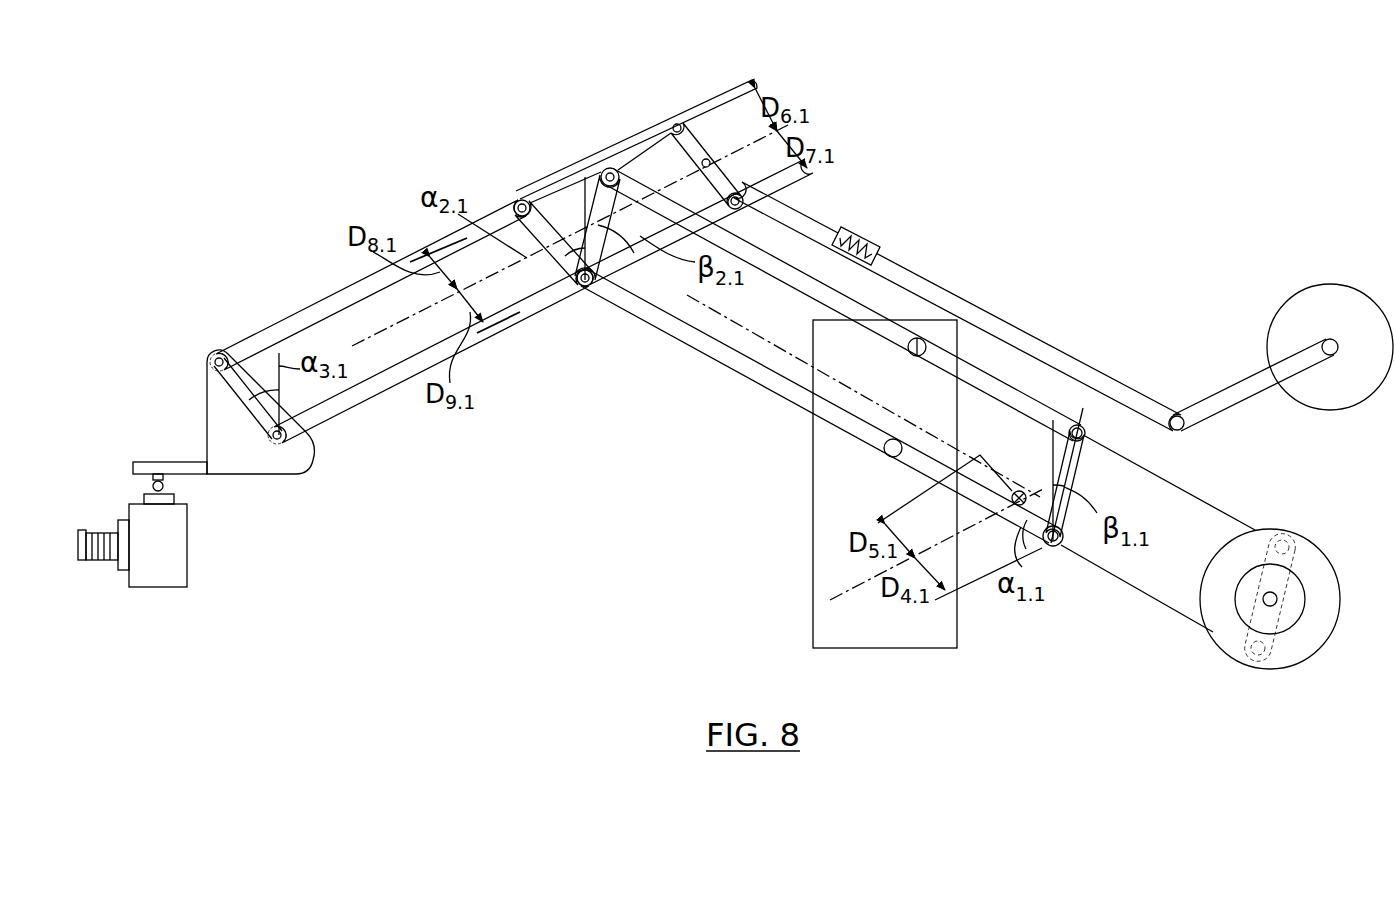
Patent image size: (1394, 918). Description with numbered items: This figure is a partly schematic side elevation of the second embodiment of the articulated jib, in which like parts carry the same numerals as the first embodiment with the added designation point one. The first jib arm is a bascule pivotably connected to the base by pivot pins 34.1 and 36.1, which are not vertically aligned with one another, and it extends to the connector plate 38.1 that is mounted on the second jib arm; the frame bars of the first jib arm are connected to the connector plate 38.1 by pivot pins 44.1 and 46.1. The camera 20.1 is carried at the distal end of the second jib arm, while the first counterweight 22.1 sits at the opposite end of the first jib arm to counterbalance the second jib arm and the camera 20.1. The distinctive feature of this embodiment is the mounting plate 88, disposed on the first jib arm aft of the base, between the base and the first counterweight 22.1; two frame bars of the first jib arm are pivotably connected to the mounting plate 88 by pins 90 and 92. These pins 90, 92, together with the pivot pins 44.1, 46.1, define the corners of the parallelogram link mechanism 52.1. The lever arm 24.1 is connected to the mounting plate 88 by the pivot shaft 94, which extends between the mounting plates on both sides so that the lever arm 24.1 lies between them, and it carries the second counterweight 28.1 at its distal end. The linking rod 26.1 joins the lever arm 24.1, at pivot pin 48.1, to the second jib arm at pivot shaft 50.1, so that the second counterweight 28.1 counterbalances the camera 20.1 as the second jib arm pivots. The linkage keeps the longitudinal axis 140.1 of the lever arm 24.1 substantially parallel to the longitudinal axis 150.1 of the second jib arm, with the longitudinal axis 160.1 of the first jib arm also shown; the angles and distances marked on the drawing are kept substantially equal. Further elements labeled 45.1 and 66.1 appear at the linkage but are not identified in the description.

The camera 20.1 is at (153, 575).
The first counterweight 22.1 is at (1315, 577).
The lever arm 24.1 is at (1230, 397).
The linking rod 26.1 is at (902, 265).
The second counterweight 28.1 is at (1323, 310).
The pivot pin 34.1 is at (886, 453).
The pivot pin 36.1 is at (924, 342).
The connector plate 38.1 is at (567, 270).
The pivot pin 44.1 is at (587, 290).
The link 45.1 is at (573, 248).
The pivot pin 46.1 is at (608, 167).
The pivot pin 48.1 is at (1177, 414).
The pivot shaft 50.1 is at (673, 124).
The parallelogram link mechanism 52.1 is at (796, 323).
The pivot joint 66.1 is at (517, 200).
The mounting plate 88 is at (1085, 483).
The pin 90 is at (1058, 547).
The pin 92 is at (1083, 426).
The pivot shaft 94 is at (1019, 490).
The longitudinal axis of the lever arm 140.1 is at (862, 577).
The longitudinal axis of the second jib arm 150.1 is at (382, 330).
The longitudinal axis of the first jib arm 160.1 is at (722, 323).